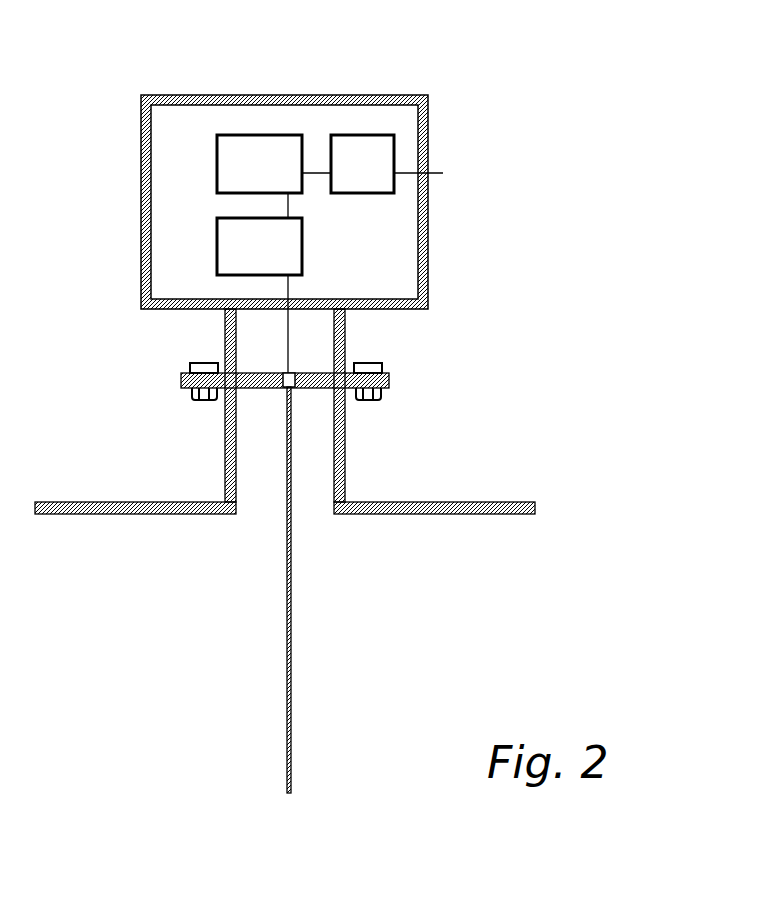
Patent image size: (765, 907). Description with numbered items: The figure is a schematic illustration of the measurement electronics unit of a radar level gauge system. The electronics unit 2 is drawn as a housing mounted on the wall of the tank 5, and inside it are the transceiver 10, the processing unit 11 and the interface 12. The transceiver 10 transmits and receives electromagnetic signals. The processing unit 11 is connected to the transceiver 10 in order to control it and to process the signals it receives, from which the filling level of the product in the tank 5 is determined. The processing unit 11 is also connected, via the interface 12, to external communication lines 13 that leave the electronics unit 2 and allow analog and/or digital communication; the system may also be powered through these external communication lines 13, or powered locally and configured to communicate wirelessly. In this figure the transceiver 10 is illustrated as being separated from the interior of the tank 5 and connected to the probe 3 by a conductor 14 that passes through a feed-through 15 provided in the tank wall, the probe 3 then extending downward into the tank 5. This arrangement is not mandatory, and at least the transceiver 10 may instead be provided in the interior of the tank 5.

The electronics unit 2 is at (202, 95).
The probe 3 is at (290, 627).
The tank 5 is at (462, 502).
The transceiver 10 is at (303, 240).
The processing unit 11 is at (217, 165).
The interface 12 is at (361, 134).
The external communication lines 13 is at (434, 176).
The conductor 14 is at (283, 373).
The feed-through 15 is at (295, 372).